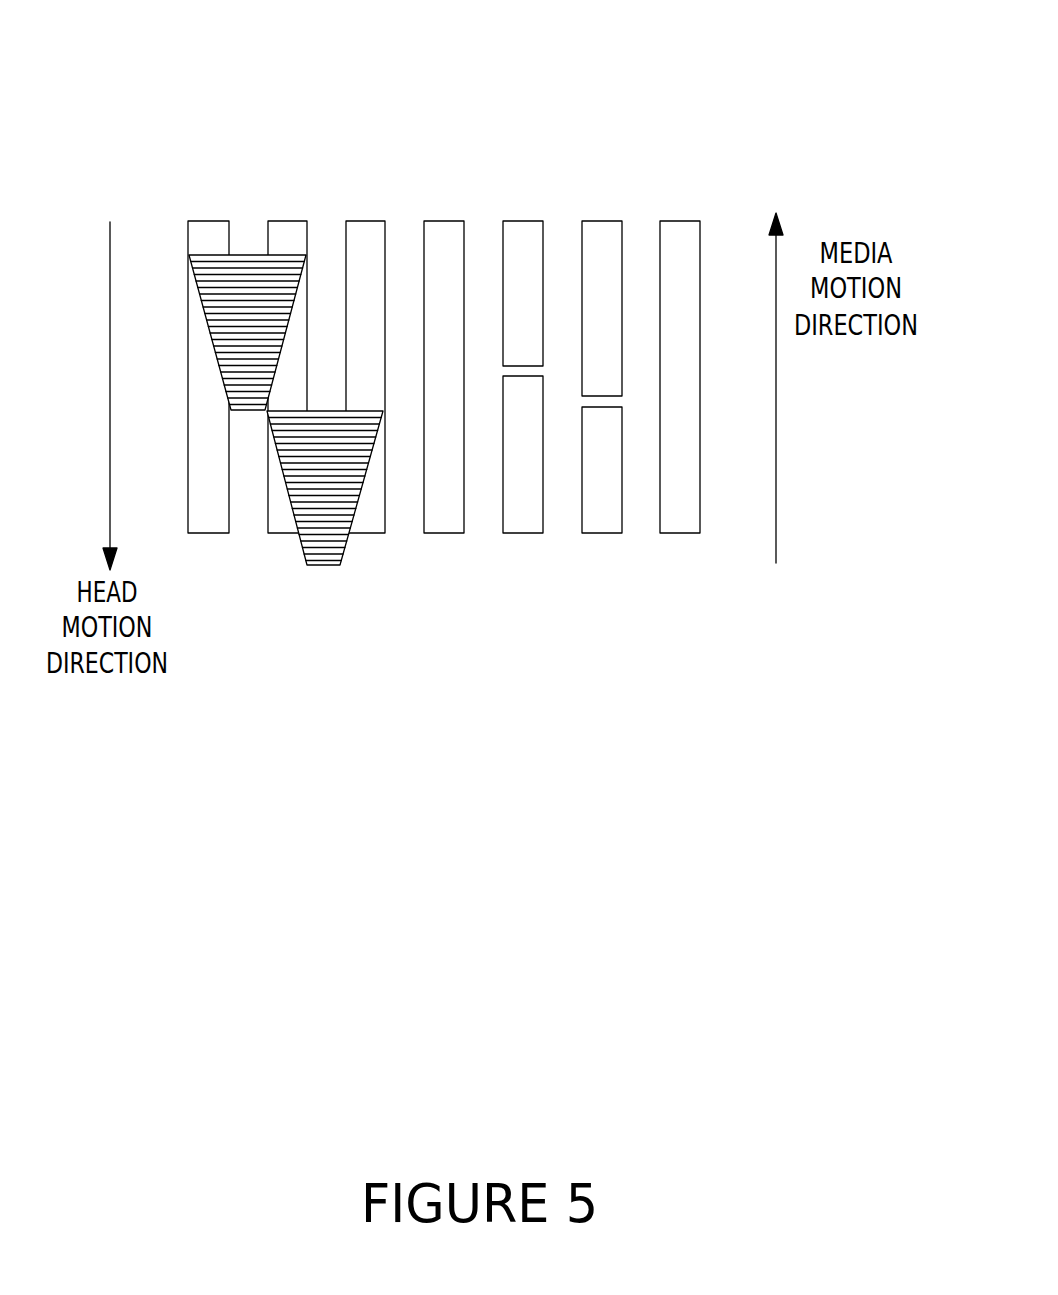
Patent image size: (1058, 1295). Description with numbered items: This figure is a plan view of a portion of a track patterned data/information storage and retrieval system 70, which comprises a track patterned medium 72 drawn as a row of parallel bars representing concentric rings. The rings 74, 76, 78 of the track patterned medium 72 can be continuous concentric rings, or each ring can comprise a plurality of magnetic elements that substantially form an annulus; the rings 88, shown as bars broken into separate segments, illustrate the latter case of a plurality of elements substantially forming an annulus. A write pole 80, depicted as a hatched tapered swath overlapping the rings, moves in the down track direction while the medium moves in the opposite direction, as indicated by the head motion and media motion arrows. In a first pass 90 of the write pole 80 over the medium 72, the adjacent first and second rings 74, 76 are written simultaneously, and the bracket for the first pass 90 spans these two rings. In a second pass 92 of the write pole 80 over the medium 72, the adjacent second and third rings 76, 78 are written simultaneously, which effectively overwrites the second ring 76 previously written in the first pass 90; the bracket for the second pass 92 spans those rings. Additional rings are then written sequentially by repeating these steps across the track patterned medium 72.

The track patterned data/information storage and retrieval system 70 is at (663, 73).
The track patterned medium 72 is at (165, 212).
The first ring 74 is at (210, 221).
The second ring 76 is at (287, 221).
The third ring 78 is at (365, 221).
The write pole 80 is at (208, 327).
The rings 88 is at (602, 221).
The first pass 90 is at (186, 552).
The second pass 92 is at (273, 610).